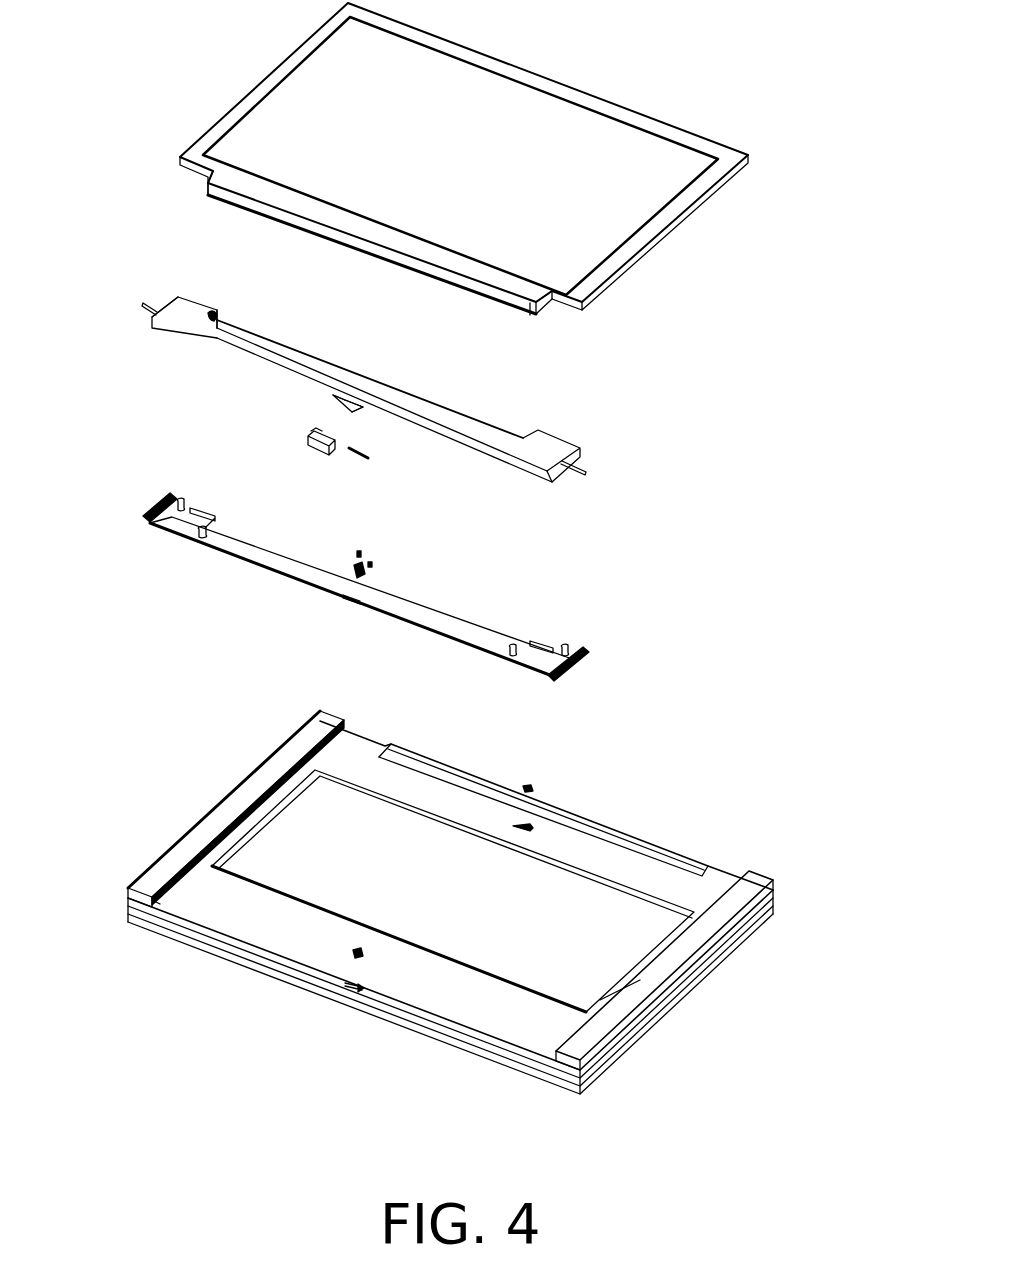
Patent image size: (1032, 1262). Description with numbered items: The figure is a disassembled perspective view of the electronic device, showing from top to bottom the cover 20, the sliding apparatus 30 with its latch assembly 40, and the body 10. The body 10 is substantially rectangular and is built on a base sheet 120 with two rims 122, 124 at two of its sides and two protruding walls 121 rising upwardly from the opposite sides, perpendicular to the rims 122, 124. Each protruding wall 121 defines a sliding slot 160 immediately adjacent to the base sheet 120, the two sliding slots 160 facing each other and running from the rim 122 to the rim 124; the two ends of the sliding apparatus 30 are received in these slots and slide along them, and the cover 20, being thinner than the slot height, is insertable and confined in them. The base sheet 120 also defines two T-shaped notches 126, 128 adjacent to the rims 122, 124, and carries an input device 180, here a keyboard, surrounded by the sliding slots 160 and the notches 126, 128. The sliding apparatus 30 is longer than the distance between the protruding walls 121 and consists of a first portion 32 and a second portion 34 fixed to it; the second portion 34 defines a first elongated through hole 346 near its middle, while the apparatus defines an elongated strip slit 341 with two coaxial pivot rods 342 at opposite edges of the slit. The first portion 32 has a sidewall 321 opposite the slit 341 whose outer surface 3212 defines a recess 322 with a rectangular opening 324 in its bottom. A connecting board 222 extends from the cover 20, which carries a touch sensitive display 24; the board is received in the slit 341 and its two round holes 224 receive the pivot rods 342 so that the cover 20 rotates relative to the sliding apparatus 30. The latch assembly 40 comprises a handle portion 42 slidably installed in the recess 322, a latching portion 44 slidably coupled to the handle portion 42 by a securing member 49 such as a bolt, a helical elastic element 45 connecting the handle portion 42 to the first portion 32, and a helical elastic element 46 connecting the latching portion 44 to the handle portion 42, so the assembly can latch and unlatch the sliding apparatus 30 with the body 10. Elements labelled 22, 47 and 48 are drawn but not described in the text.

The body 10 is at (712, 725).
The cover 20 is at (688, 86).
The cover plate 22 is at (630, 250).
The display 24 is at (677, 177).
The connecting board 222 is at (352, 245).
The round holes 224 is at (532, 313).
The sliding apparatus 30 is at (683, 456).
The first portion 32 is at (560, 440).
The second portion 34 is at (583, 647).
The sidewall 321 is at (197, 342).
The outer surface 3212 is at (227, 352).
The recess 322 is at (335, 398).
The rectangular opening 324 is at (352, 400).
The elongated strip slit 341 is at (518, 432).
The pivot rods 342 is at (530, 640).
The first elongated through hole 346 is at (347, 600).
The latch assembly 40 is at (281, 432).
The handle portion 42 is at (315, 448).
The latching portion 44 is at (355, 567).
The elastic element 45 is at (363, 453).
The elastic element 46 is at (358, 556).
The securing member 49 is at (371, 565).
The screw 47 is at (353, 952).
The screw 48 is at (529, 788).
The base sheet 120 is at (442, 987).
The protruding walls 121 is at (248, 793).
The rim 122 is at (508, 1053).
The rim 124 is at (365, 745).
The T-shaped notch 126 is at (347, 995).
The T-shaped notch 128 is at (530, 827).
The sliding slot 160 is at (160, 910).
The input device 180 is at (617, 953).